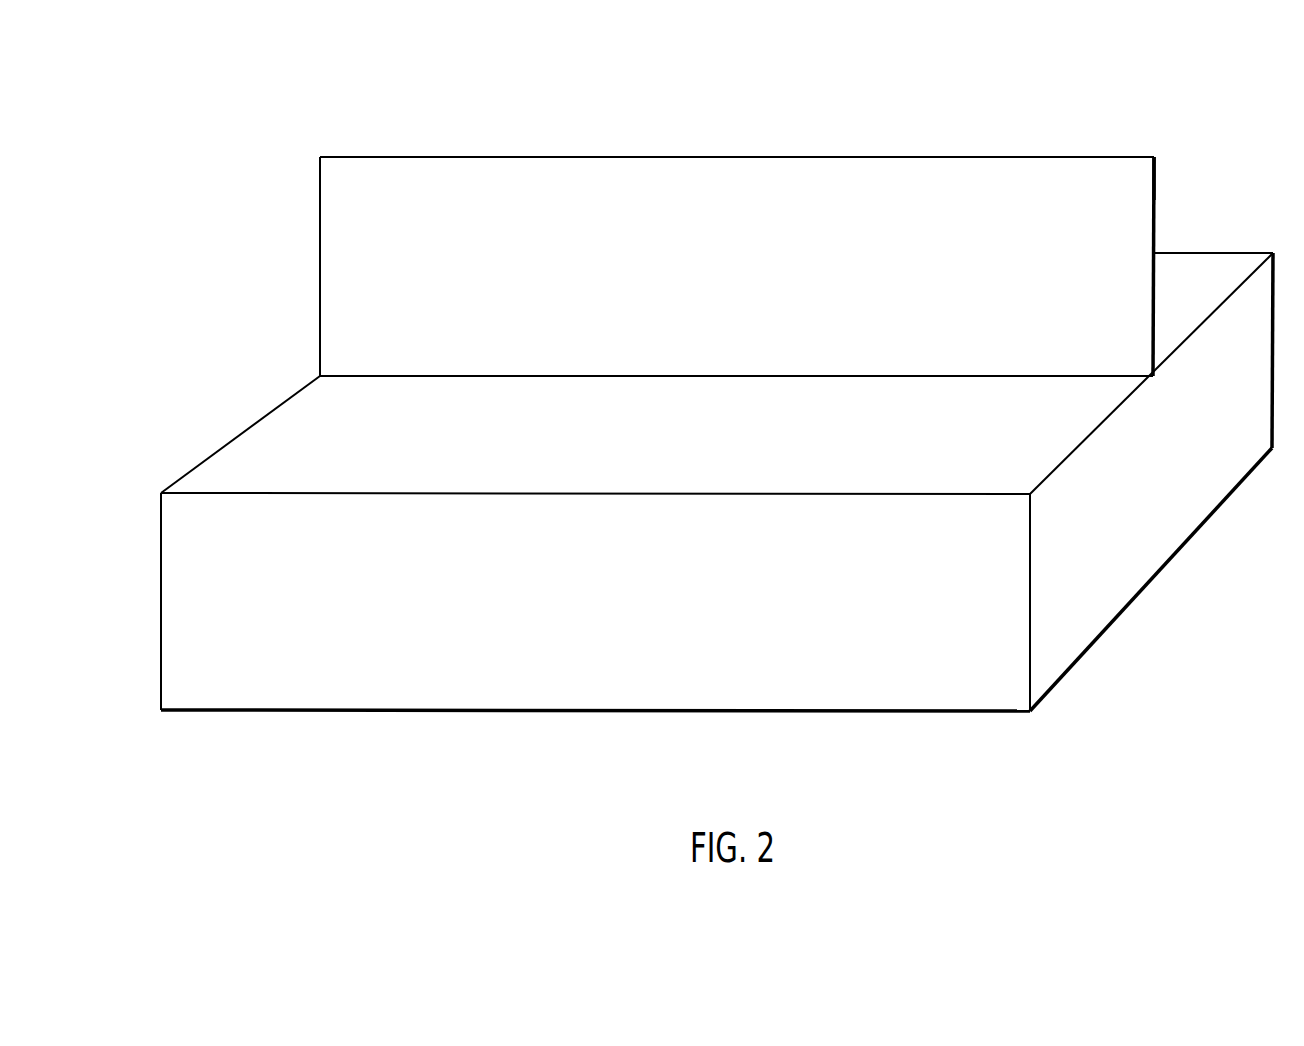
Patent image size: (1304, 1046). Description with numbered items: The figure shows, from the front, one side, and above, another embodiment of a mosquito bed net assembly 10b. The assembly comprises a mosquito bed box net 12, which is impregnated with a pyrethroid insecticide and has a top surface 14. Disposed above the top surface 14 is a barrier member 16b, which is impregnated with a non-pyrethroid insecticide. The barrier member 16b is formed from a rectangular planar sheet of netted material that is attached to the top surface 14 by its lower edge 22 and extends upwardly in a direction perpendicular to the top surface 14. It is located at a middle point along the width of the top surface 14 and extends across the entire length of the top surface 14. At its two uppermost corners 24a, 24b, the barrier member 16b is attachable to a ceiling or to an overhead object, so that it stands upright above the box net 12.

The mosquito bed net assembly 10b is at (424, 116).
The mosquito bed box net 12 is at (722, 665).
The top surface 14 is at (288, 455).
The barrier member 16b is at (712, 213).
The lower edge 22 is at (790, 376).
The uppermost corner 24a is at (318, 157).
The uppermost corner 24b is at (1156, 157).